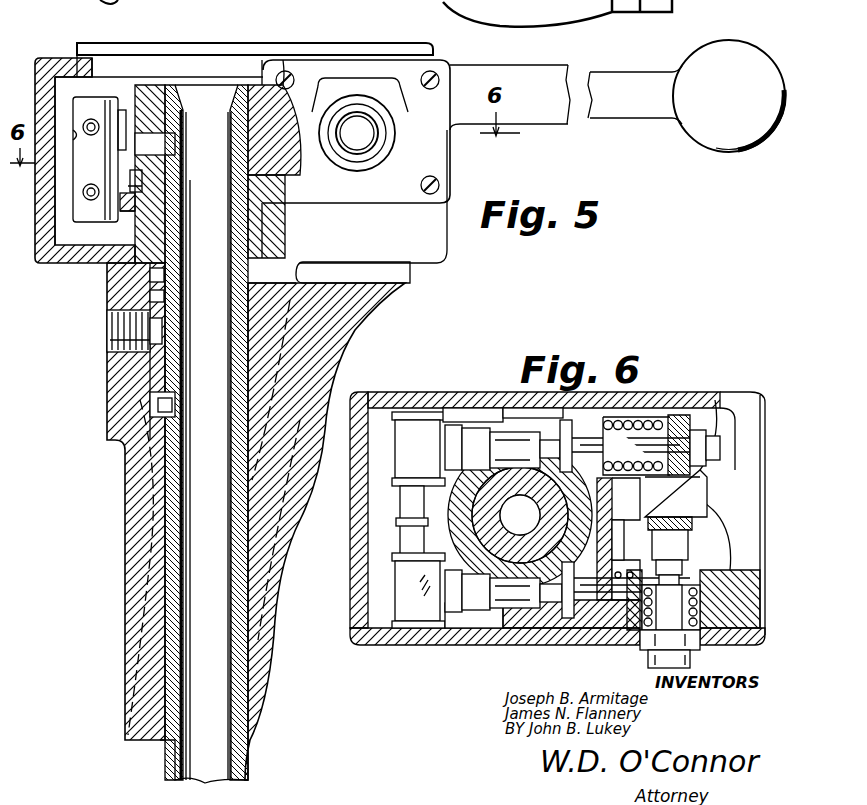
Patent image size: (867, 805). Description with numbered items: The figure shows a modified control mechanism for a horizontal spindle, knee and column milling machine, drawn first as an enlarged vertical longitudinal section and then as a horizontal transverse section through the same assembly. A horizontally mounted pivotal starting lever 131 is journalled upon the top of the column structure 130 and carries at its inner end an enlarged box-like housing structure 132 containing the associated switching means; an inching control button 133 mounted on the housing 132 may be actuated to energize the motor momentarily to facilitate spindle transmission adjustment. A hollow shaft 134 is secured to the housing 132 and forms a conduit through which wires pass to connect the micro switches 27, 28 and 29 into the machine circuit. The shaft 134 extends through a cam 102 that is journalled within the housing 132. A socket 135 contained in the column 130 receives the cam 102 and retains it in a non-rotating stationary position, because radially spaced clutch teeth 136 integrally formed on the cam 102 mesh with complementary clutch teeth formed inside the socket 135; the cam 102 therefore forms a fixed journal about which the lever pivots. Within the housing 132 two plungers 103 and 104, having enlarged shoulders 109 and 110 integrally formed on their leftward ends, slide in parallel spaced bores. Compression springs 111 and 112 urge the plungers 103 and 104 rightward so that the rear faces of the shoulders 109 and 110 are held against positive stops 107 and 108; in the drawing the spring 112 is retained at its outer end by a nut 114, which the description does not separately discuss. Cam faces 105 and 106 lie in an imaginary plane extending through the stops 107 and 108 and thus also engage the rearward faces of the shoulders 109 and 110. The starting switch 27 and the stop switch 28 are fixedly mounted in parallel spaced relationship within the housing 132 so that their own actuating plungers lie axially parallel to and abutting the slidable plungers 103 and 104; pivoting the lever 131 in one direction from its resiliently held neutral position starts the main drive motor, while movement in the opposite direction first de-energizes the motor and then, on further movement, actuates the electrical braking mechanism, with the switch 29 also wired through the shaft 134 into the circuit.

In FIG. 6, the starting switch 27 is at (395, 591).
In FIG. 5, the stop switch 28 is at (95, 100).
In FIG. 6, the stop switch 28 is at (395, 441).
In FIG. 6, the micro switch 29 is at (700, 497).
In FIG. 5, the cam 102 is at (128, 224).
In FIG. 6, the cam 102 is at (570, 508).
In FIG. 6, the plunger 103 is at (560, 632).
In FIG. 6, the plunger 104 is at (618, 485).
In FIG. 6, the cam face 105 is at (520, 515).
In FIG. 6, the cam face 106 is at (590, 490).
In FIG. 6, the positive stop 107 is at (526, 630).
In FIG. 6, the positive stop 108 is at (560, 406).
In FIG. 6, the plunger shoulder 109 is at (500, 615).
In FIG. 6, the plunger shoulder 110 is at (556, 416).
In FIG. 6, the compression spring 111 is at (600, 600).
In FIG. 6, the compression spring 112 is at (655, 418).
In FIG. 6, the nut 114 is at (690, 468).
In FIG. 5, the column structure 130 is at (110, 392).
In FIG. 5, the starting lever 131 is at (650, 108).
In FIG. 5, the housing structure 132 is at (432, 260).
In FIG. 6, the housing structure 132 is at (398, 405).
In FIG. 5, the inching control button 133 is at (357, 128).
In FIG. 6, the inching control button 133 is at (648, 648).
In FIG. 5, the hollow shaft 134 is at (150, 271).
In FIG. 6, the hollow shaft 134 is at (552, 526).
In FIG. 5, the socket 135 is at (150, 287).
In FIG. 5, the clutch teeth 136 is at (305, 276).